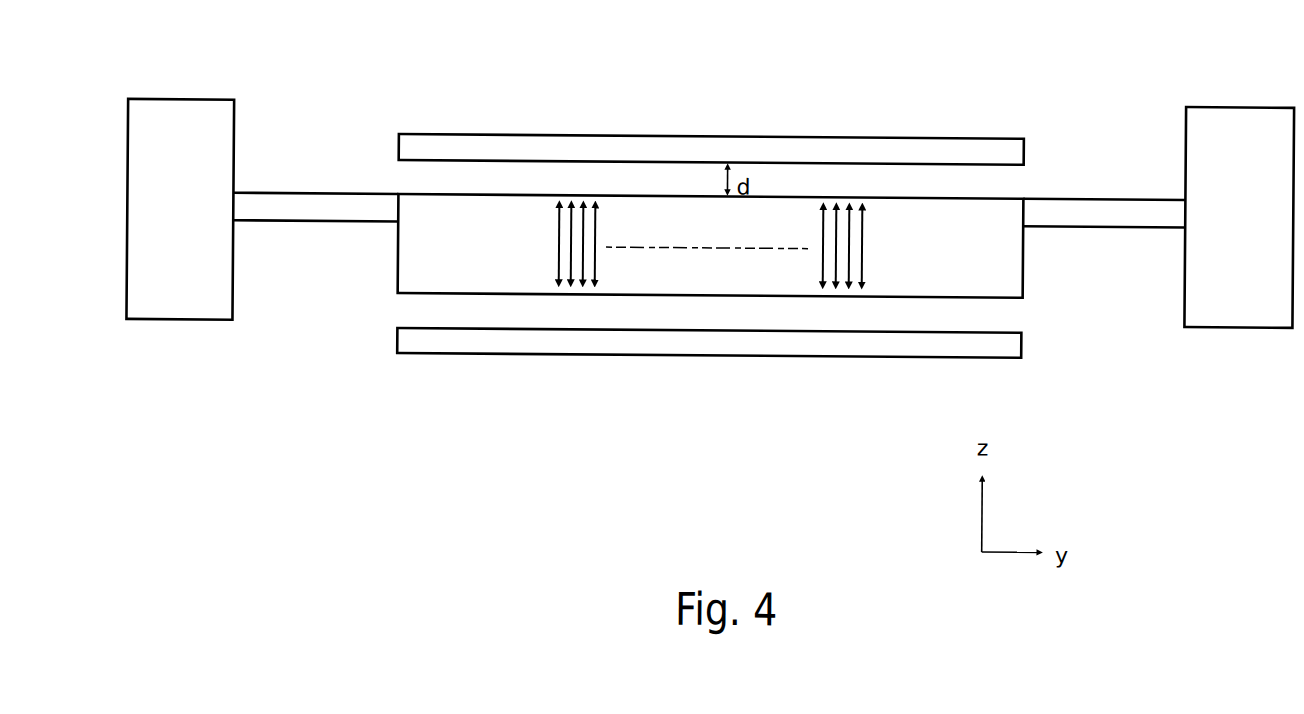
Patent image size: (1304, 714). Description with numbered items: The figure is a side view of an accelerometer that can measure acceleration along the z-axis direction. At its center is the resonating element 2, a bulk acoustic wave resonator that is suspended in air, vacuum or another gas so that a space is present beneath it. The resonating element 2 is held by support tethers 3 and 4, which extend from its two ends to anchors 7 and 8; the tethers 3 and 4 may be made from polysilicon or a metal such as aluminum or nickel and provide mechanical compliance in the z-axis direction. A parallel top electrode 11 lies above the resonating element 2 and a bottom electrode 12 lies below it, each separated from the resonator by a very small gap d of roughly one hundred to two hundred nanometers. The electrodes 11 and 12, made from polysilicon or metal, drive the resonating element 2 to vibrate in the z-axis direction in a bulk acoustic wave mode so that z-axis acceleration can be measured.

The resonating element 2 is at (1012, 196).
The support tether 3 is at (1107, 196).
The support tether 4 is at (300, 196).
The anchor 7 is at (160, 103).
The anchor 8 is at (1254, 103).
The top electrode 11 is at (753, 136).
The bottom electrode 12 is at (785, 356).